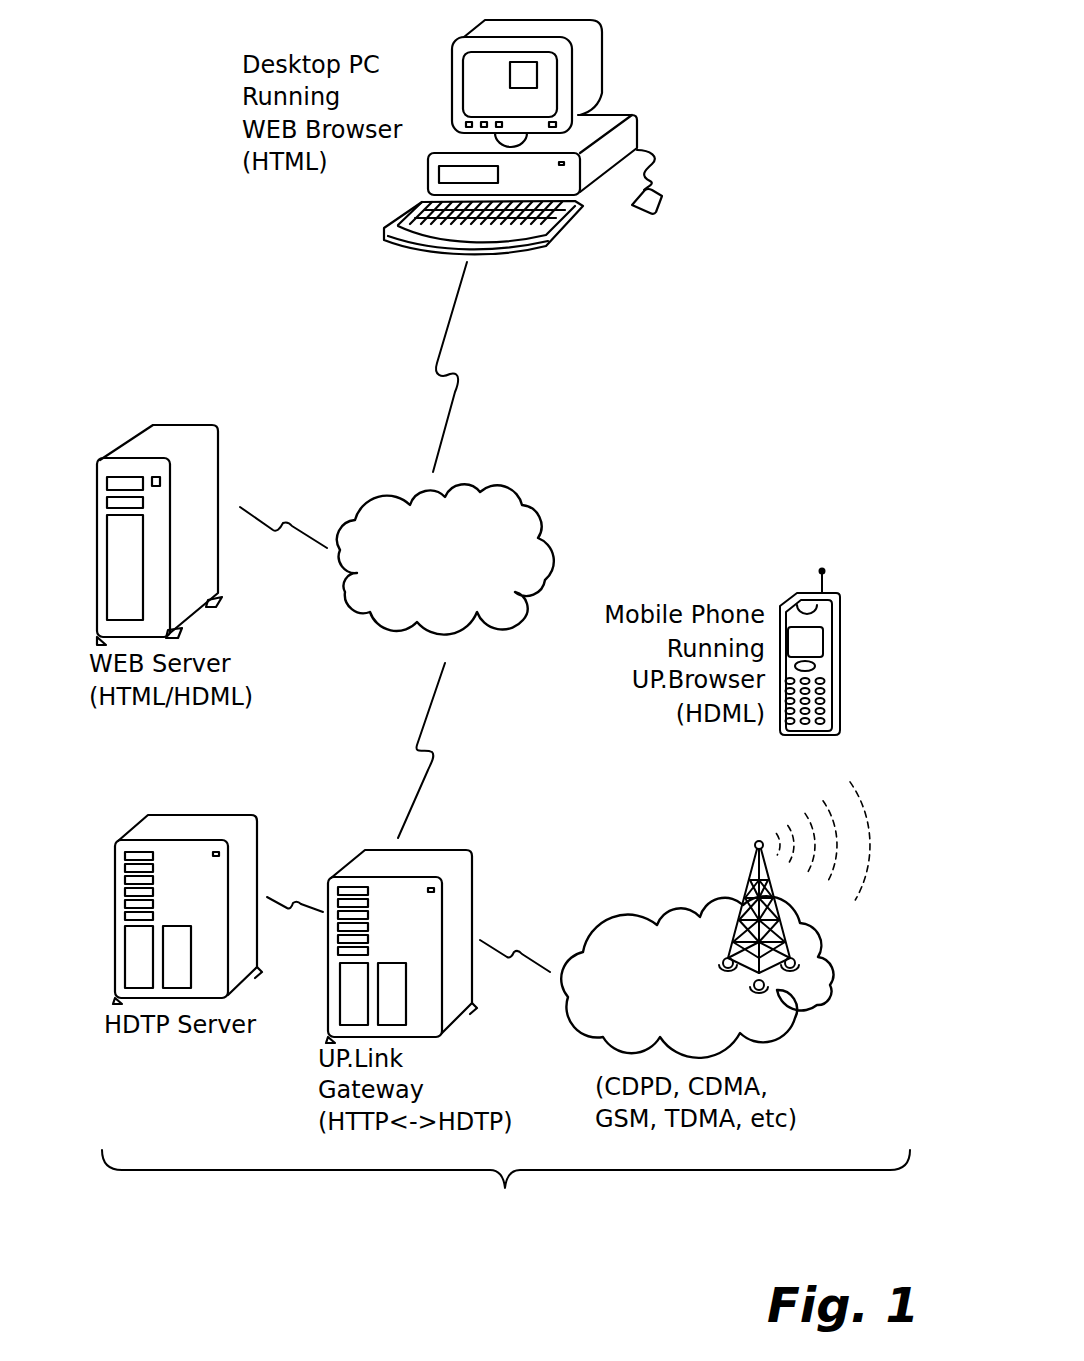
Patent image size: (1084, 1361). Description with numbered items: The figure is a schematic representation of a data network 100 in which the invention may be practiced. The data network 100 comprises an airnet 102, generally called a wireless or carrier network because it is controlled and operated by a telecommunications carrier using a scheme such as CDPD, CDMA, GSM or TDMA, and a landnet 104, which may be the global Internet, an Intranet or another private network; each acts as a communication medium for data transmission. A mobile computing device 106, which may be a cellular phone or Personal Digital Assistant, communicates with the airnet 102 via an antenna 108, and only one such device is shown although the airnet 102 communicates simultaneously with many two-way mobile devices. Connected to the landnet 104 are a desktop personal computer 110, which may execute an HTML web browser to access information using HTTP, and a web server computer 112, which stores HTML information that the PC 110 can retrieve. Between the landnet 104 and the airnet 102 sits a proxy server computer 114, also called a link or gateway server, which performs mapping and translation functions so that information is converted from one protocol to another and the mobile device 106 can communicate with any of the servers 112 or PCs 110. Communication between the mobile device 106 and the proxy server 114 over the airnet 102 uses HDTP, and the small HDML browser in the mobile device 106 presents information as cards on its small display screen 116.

The data network 100 is at (697, 409).
The airnet 102 is at (817, 1005).
The landnet 104 is at (503, 477).
The mobile computing device 106 is at (853, 656).
The antenna 108 is at (754, 845).
The desktop personal computer 110 is at (620, 90).
The web server computer 112 is at (185, 425).
The proxy server computer 114 is at (448, 850).
The display screen 116 is at (820, 643).